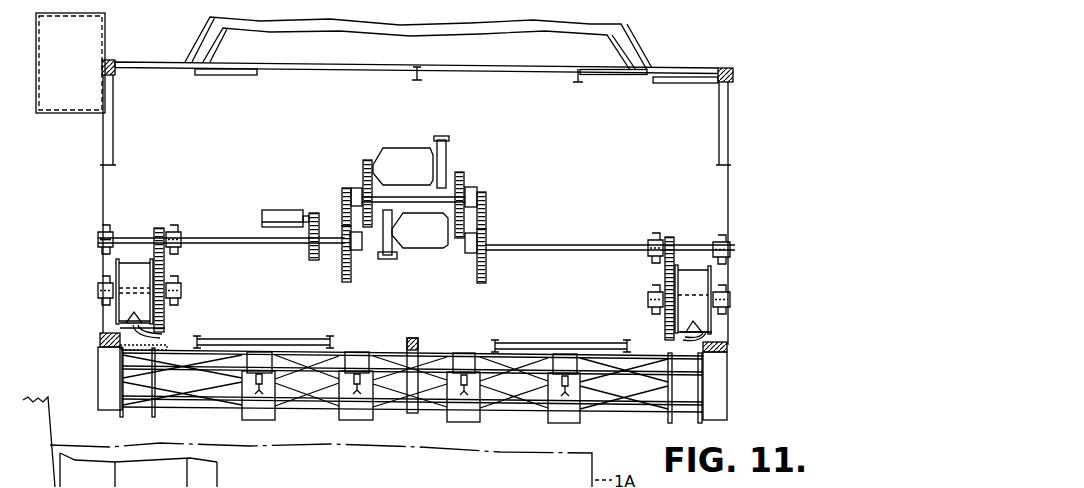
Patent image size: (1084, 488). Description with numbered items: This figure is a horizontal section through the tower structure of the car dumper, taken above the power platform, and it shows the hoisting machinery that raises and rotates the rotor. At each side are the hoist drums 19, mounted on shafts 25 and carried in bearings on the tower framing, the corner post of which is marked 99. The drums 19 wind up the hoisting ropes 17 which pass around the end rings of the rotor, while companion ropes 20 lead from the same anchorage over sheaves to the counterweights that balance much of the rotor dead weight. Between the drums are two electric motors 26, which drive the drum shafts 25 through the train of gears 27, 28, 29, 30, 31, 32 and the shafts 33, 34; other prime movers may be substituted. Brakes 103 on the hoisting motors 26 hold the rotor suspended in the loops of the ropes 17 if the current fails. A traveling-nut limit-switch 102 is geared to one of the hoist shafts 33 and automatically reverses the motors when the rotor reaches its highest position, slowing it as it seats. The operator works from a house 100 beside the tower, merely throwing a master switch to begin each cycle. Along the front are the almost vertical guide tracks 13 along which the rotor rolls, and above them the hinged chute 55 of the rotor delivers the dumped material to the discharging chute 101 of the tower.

The guide tracks 13 is at (38, 418).
The ropes 17 is at (416, 314).
The hoist drums 19 is at (128, 262).
The ropes 20 is at (160, 338).
The shafts 25 is at (648, 300).
The electric motors 26 is at (398, 148).
The gear 27 is at (456, 283).
The gear 28 is at (464, 172).
The gear 29 is at (343, 193).
The gear 30 is at (342, 272).
The gear 31 is at (160, 232).
The gear 32 is at (155, 326).
The hoist shaft 33 is at (213, 240).
The shaft 34 is at (418, 198).
The chute 55 is at (621, 49).
The frame post 99 is at (733, 72).
The house 100 is at (52, 116).
The discharging chute 101 is at (643, 57).
The traveling-nut limit-switch 102 is at (283, 210).
The brakes 103 is at (448, 162).